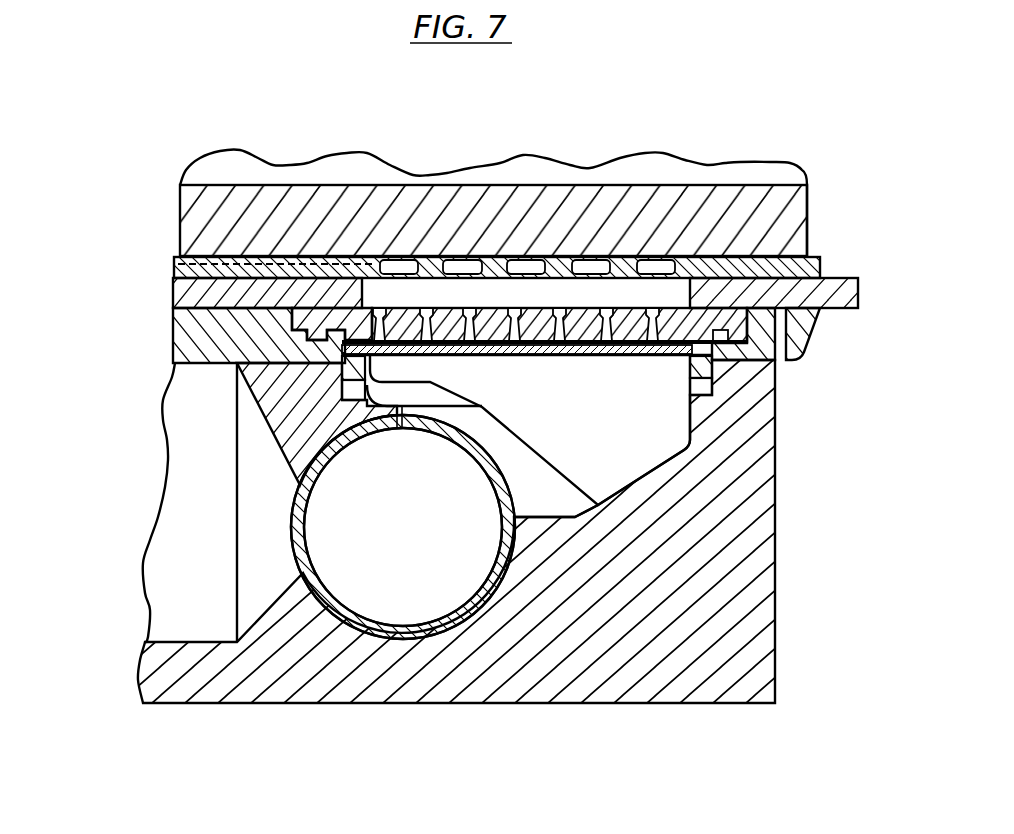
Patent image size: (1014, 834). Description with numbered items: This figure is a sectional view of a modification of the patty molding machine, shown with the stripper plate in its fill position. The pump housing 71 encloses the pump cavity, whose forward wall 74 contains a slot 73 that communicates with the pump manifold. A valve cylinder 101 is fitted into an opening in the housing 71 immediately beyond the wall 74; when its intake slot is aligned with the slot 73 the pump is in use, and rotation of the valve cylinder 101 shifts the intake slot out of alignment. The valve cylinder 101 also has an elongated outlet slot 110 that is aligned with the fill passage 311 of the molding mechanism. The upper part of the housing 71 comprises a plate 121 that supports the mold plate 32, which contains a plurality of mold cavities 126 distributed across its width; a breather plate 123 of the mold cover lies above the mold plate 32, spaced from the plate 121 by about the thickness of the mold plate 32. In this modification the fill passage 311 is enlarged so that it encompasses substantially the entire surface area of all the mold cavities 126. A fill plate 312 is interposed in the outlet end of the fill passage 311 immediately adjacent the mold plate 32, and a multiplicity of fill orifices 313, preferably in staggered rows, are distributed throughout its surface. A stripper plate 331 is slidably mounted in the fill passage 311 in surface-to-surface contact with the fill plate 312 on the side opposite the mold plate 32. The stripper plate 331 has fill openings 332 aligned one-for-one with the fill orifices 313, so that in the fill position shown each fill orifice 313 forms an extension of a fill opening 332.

The housing 71 is at (777, 458).
The slot 73 is at (293, 507).
The forward wall 74 is at (252, 409).
The valve cylinder 101 is at (337, 520).
The outlet slot 110 is at (500, 498).
The plate 121 is at (176, 340).
The breather plate 123 is at (820, 258).
The mold cavities 126 is at (690, 290).
The fill passage 311 is at (618, 480).
The fill plate 312 is at (492, 340).
The fill orifices 313 is at (443, 457).
The stripper plate 331 is at (490, 356).
The fill openings 332 is at (665, 356).
The mold plate 32 is at (858, 295).